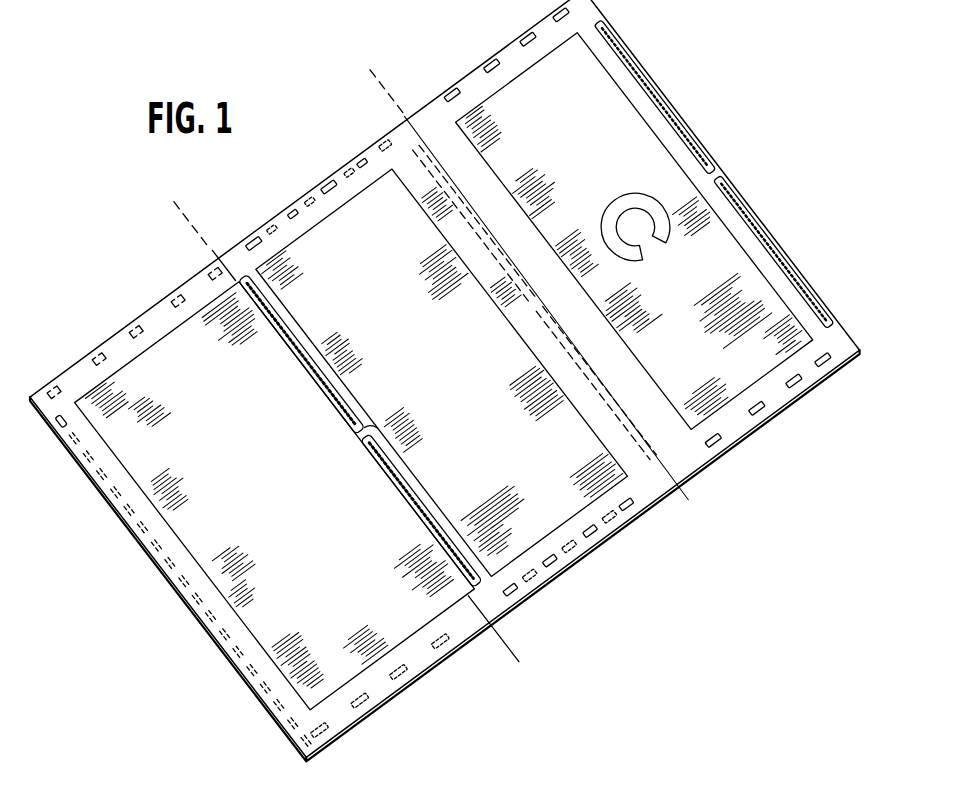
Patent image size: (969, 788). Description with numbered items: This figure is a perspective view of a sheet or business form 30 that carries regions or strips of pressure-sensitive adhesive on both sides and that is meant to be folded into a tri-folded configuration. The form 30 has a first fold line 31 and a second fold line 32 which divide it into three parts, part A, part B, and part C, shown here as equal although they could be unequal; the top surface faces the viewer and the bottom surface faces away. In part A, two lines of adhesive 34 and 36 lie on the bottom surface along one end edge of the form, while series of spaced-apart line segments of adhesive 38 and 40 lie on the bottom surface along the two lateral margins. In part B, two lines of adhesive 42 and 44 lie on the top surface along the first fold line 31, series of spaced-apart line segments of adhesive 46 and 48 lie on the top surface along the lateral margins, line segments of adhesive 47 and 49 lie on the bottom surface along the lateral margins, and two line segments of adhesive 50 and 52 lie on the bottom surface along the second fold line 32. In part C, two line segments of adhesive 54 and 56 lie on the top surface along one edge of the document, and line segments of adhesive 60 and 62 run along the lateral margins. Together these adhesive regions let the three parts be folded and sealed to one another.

The sheet or business form 30 is at (658, 787).
The first fold line 31 is at (182, 216).
The second fold line 32 is at (377, 76).
The line of adhesive 34 is at (125, 532).
The line of adhesive 36 is at (204, 628).
The spaced-apart line segments of adhesive 38 is at (398, 680).
The spaced-apart line segments of adhesive 40 is at (136, 328).
The line of adhesive 42 is at (250, 283).
The line of adhesive 44 is at (492, 607).
The spaced-apart line segments of adhesive 46 is at (628, 507).
The line segments of adhesive 47 is at (636, 560).
The spaced-apart line segments of adhesive 48 is at (290, 208).
The line segments of adhesive 49 is at (383, 148).
The line segment of adhesive 50 is at (396, 106).
The line segment of adhesive 52 is at (680, 470).
The line segment of adhesive 54 is at (673, 116).
The line segment of adhesive 56 is at (783, 257).
The line segments of adhesive 60 is at (790, 425).
The line segments of adhesive 62 is at (446, 90).